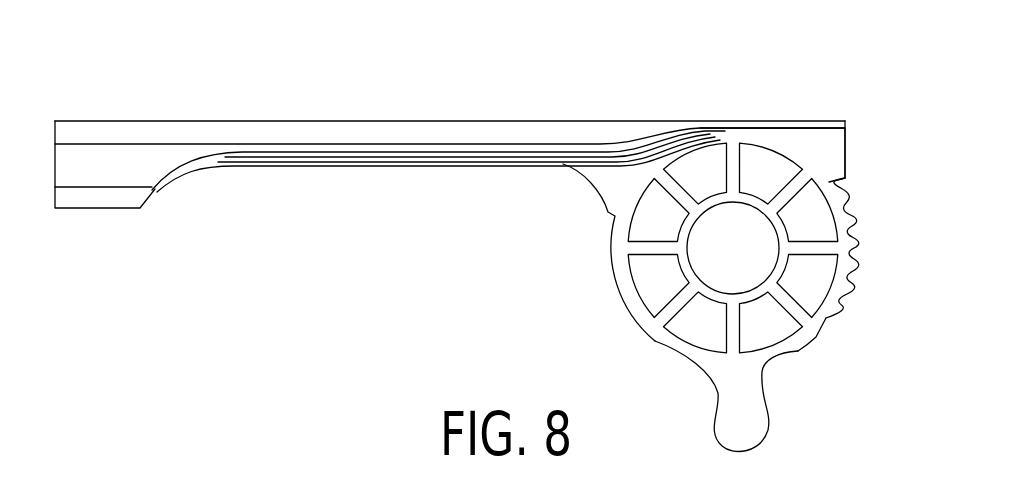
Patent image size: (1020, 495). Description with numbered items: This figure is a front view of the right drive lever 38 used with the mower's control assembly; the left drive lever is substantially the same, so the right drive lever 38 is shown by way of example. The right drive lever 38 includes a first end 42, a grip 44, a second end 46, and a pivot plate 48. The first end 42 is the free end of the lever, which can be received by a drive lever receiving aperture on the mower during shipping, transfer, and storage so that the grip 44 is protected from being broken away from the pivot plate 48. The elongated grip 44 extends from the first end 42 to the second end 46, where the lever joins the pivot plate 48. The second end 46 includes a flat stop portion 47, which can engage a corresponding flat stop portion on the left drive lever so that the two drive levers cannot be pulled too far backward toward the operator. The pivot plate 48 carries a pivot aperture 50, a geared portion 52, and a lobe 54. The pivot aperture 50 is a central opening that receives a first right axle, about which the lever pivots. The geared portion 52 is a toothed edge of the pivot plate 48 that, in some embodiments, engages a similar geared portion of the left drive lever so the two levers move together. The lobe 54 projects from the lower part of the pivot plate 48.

The right drive lever 38 is at (484, 78).
The first end 42 is at (97, 203).
The grip 44 is at (337, 134).
The second end 46 is at (816, 146).
The flat stop portion 47 is at (848, 160).
The pivot plate 48 is at (656, 336).
The pivot aperture 50 is at (742, 226).
The geared portion 52 is at (847, 250).
The lobe 54 is at (748, 428).